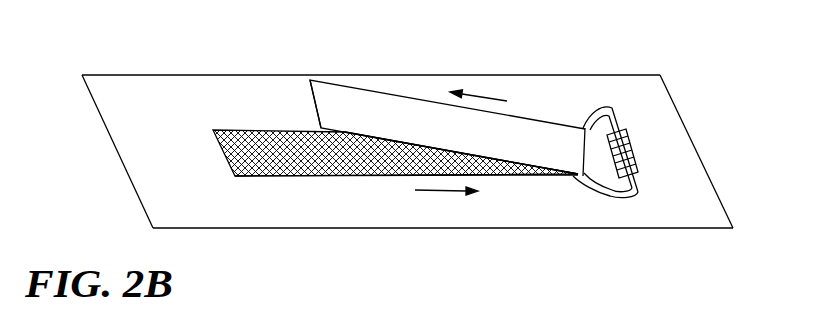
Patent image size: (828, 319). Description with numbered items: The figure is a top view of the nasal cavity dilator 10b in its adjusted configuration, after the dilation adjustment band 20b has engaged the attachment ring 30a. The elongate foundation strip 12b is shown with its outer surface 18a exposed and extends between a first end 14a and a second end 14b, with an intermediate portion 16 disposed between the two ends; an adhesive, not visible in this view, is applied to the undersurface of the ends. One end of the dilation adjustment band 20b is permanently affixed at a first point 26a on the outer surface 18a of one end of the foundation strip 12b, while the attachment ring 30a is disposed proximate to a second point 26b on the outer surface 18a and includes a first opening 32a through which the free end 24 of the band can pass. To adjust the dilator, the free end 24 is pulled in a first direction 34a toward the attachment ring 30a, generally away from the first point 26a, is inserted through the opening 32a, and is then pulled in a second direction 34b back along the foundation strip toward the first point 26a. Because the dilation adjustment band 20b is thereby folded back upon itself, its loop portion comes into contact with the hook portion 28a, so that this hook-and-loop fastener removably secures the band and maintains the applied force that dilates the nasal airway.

The nasal cavity dilator 10b is at (418, 156).
The foundation strip 12b is at (316, 229).
The first end 14a is at (118, 148).
The second end 14b is at (722, 201).
The intermediate portion 16 is at (409, 88).
The outer surface 18a is at (130, 84).
The dilation adjustment band 20b is at (525, 176).
The free end 24 is at (315, 102).
The first point 26a is at (366, 201).
The second point 26b is at (638, 150).
The hook portion 28a is at (257, 175).
The attachment ring 30a is at (617, 198).
The first opening 32a is at (669, 157).
The first direction 34a is at (426, 188).
The second direction 34b is at (497, 102).